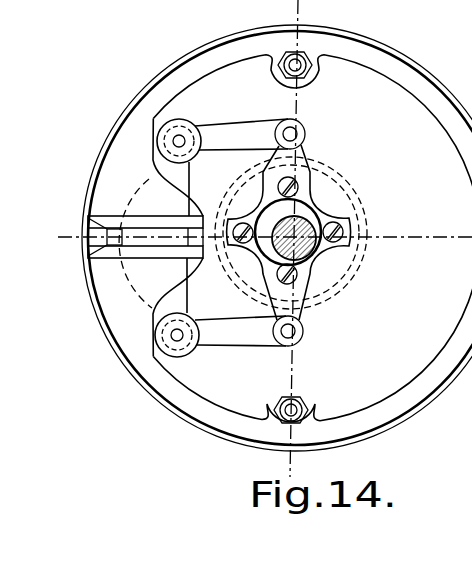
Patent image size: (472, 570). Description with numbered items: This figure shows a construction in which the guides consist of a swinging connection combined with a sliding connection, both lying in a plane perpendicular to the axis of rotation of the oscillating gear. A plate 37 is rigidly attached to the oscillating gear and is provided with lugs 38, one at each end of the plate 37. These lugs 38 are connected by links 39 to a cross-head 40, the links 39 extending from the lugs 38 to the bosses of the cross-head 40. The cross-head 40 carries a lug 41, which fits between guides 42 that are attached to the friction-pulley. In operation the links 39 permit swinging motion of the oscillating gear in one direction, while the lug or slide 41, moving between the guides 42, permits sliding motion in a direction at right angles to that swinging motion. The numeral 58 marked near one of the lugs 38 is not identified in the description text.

The plate 37 is at (289, 232).
The lugs 38 is at (287, 325).
The pivot pin 58 is at (286, 142).
The links 39 is at (241, 232).
The cross-head 40 is at (178, 238).
The lug 41 is at (83, 259).
The guides 42 is at (145, 237).